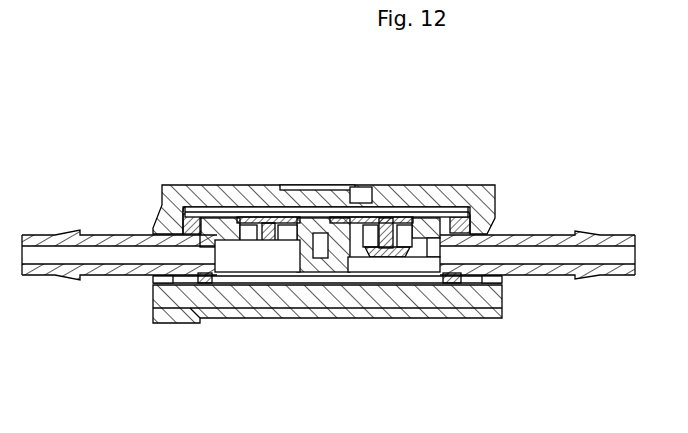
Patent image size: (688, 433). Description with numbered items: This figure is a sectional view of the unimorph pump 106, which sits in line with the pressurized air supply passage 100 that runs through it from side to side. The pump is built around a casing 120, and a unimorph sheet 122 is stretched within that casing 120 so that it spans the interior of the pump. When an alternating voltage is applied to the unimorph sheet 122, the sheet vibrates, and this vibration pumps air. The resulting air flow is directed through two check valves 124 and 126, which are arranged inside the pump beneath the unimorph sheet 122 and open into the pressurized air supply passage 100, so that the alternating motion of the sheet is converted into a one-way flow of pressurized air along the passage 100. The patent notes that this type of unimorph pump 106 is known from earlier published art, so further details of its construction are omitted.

The pressurized air supply passage 100 is at (605, 222).
The unimorph pump 106 is at (347, 215).
The casing 120 is at (488, 183).
The unimorph sheet 122 is at (420, 212).
The check valve 124 is at (250, 225).
The check valve 126 is at (390, 272).